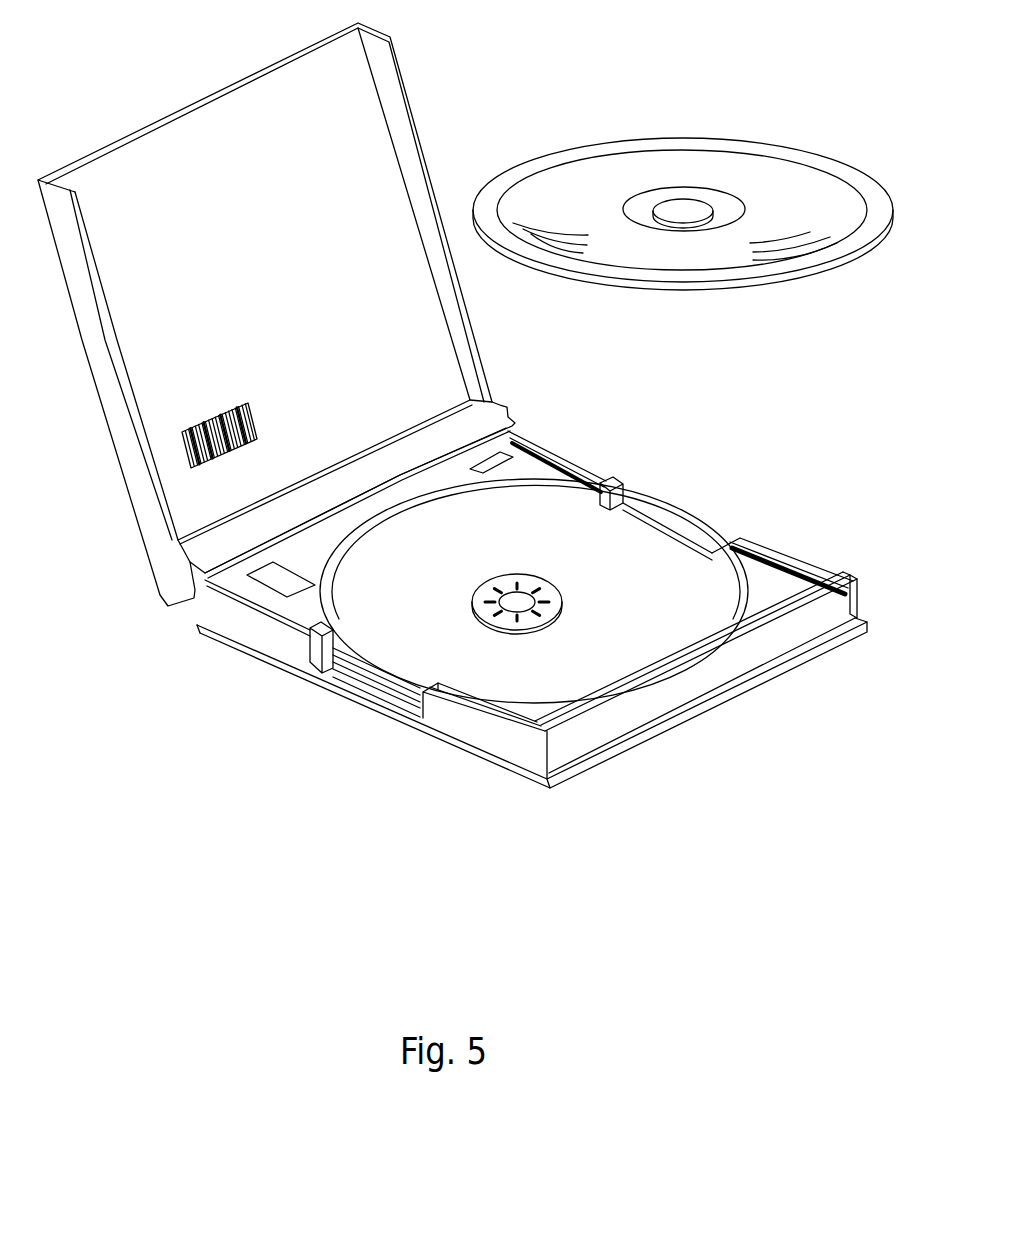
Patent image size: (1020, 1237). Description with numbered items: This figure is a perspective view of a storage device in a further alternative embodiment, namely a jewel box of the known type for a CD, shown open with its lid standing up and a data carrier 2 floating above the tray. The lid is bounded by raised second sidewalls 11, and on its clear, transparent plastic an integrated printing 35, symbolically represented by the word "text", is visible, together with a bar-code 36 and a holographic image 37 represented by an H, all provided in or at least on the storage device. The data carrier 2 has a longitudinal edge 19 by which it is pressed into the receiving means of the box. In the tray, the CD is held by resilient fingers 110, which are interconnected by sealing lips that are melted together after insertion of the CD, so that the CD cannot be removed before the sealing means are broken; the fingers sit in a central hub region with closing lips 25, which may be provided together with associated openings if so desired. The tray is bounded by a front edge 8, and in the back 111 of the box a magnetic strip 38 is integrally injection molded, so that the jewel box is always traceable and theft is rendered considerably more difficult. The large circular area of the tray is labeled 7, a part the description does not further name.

The second sidewalls 11 is at (413, 60).
The printing 35 is at (313, 207).
The bar-code 36 is at (253, 417).
The holographic image 37 is at (398, 370).
The data carrier 2 is at (763, 170).
The longitudinal edge 19 is at (842, 175).
The back 111 is at (540, 418).
The magnetic strip 38 is at (540, 445).
The disc recess 7 is at (650, 565).
The front edge 8 is at (863, 595).
The resilient fingers 110 is at (540, 603).
The closing lips 25 is at (507, 615).